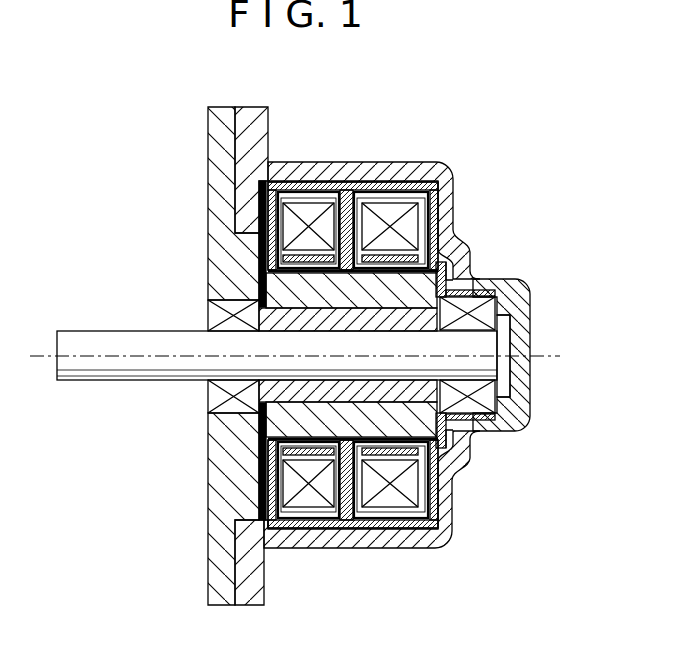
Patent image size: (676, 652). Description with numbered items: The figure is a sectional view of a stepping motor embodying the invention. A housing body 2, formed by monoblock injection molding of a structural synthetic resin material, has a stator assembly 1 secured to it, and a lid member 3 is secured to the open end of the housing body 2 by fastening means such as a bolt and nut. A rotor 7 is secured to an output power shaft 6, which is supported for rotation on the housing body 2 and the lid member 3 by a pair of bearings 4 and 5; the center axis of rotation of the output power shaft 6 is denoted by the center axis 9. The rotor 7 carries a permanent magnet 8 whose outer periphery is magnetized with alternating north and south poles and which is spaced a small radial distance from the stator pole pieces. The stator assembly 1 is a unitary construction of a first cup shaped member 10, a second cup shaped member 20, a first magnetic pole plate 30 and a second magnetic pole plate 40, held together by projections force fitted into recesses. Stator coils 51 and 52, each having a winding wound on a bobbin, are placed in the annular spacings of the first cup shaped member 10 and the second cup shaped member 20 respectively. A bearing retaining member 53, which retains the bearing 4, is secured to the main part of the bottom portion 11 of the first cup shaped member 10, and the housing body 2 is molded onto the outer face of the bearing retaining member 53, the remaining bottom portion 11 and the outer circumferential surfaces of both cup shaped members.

The stator assembly 1 is at (355, 160).
The housing body 2 is at (252, 112).
The lid member 3 is at (228, 108).
The bearing 4 is at (485, 318).
The bearing 5 is at (217, 398).
The output power shaft 6 is at (110, 331).
The rotor 7 is at (222, 323).
The permanent magnet 8 is at (420, 289).
The center axis of rotation 9 is at (85, 356).
The first cup shaped member 10 is at (442, 183).
The bottom portion 11 is at (453, 528).
The second cup shaped member 20 is at (260, 223).
The first magnetic pole plate 30 is at (376, 220).
The second magnetic pole plate 40 is at (331, 222).
The stator coil 51 is at (393, 500).
The stator coil 52 is at (303, 500).
The bearing retaining member 53 is at (470, 423).